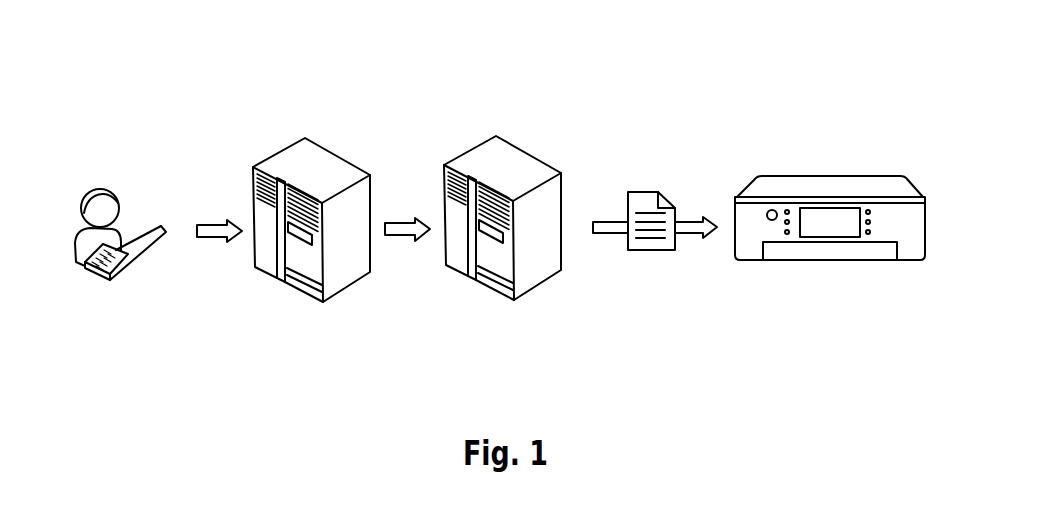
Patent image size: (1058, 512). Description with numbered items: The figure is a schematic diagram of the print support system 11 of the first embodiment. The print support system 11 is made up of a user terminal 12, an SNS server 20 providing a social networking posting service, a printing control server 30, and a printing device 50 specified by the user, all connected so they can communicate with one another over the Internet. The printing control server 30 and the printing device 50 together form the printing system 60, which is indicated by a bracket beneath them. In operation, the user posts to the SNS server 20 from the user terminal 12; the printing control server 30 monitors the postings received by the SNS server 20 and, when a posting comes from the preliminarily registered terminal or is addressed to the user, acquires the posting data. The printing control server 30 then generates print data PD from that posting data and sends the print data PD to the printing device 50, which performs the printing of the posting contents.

The print support system 11 is at (431, 61).
The user terminal 12 is at (148, 237).
The SNS server 20 is at (324, 148).
The printing control server 30 is at (502, 198).
The print data PD is at (649, 191).
The printing device 50 is at (832, 175).
The printing system 60 is at (927, 305).